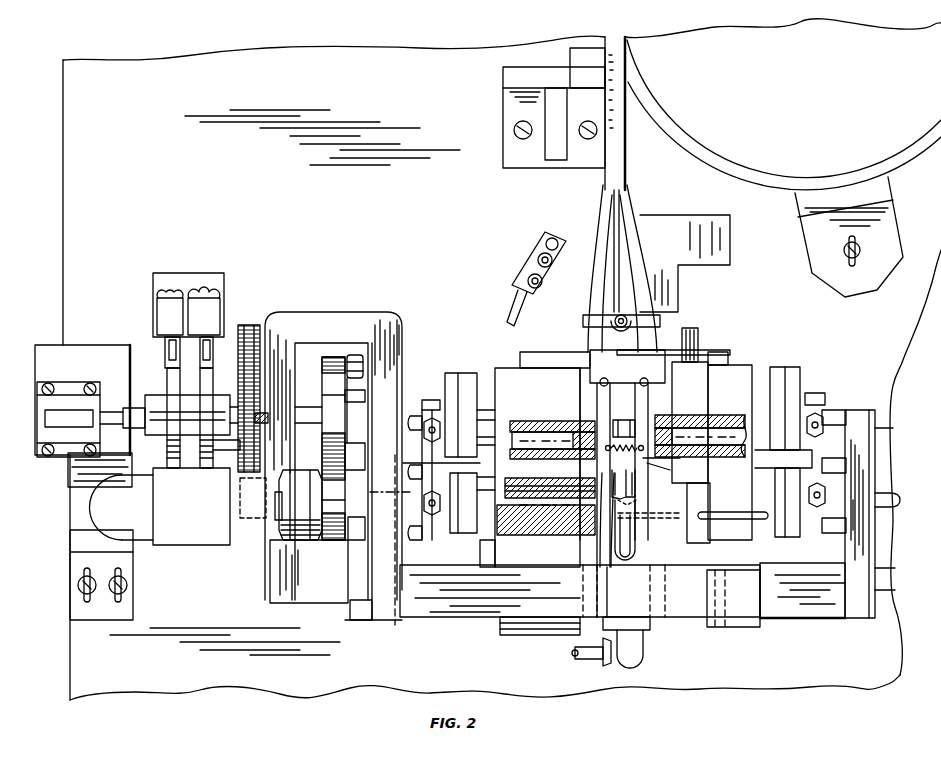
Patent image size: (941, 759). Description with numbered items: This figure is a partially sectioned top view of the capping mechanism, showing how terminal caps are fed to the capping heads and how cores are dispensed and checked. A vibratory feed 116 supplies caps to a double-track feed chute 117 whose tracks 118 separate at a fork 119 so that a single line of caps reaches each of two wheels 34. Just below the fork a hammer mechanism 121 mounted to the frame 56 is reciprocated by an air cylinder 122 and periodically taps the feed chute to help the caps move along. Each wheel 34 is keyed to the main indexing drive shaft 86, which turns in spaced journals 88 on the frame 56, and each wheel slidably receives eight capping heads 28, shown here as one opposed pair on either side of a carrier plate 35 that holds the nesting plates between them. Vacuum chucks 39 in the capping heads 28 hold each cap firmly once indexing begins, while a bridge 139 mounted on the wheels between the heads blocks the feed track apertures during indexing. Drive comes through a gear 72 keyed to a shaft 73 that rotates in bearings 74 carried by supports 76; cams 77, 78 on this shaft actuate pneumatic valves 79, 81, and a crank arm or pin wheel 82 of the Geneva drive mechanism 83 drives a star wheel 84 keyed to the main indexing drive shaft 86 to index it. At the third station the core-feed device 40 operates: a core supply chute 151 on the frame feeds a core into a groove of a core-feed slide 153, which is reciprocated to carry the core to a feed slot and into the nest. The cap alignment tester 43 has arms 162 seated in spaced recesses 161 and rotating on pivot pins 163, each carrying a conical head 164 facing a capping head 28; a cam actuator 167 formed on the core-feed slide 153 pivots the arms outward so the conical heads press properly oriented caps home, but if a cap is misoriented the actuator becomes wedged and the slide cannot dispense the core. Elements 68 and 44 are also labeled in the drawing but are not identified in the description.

The frame 56 is at (63, 176).
The vibratory feed 116 is at (784, 168).
The feed chute 117 is at (626, 150).
The tracks 118 is at (650, 256).
The fork 119 is at (612, 205).
The air cylinder 122 is at (619, 314).
The hammer mechanism 121 is at (633, 328).
The carrier plate 35 is at (618, 395).
The spaced recesses 161 is at (600, 378).
The pivot pin 163 is at (686, 352).
The bridge 139 is at (592, 391).
The capping heads 28 is at (545, 432).
The vacuum chucks 39 is at (668, 440).
The arm 162 is at (670, 470).
The cap alignment tester 43 is at (647, 472).
The cam actuator 167 is at (630, 513).
The core-feed slide 153 is at (640, 537).
The core-feed device 40 is at (688, 535).
The core supply chute 151 is at (745, 522).
The rod 68 is at (612, 540).
The conical head 164 is at (597, 537).
The wheels 34 is at (520, 636).
The main indexing drive shaft 86 is at (395, 476).
The spaced journals 88 is at (392, 552).
The supports 76 is at (35, 358).
The bearings 74 is at (37, 400).
The shaft 73 is at (142, 408).
The pneumatic valve 79 is at (160, 312).
The pneumatic valve 81 is at (218, 305).
The cam 77 is at (176, 392).
The cam 78 is at (208, 372).
The gear 72 is at (252, 325).
The crank arm or pin wheel 82 is at (332, 357).
The Geneva drive mechanism 83 is at (358, 350).
The star wheel 84 is at (358, 404).
The clamp 44 is at (456, 363).